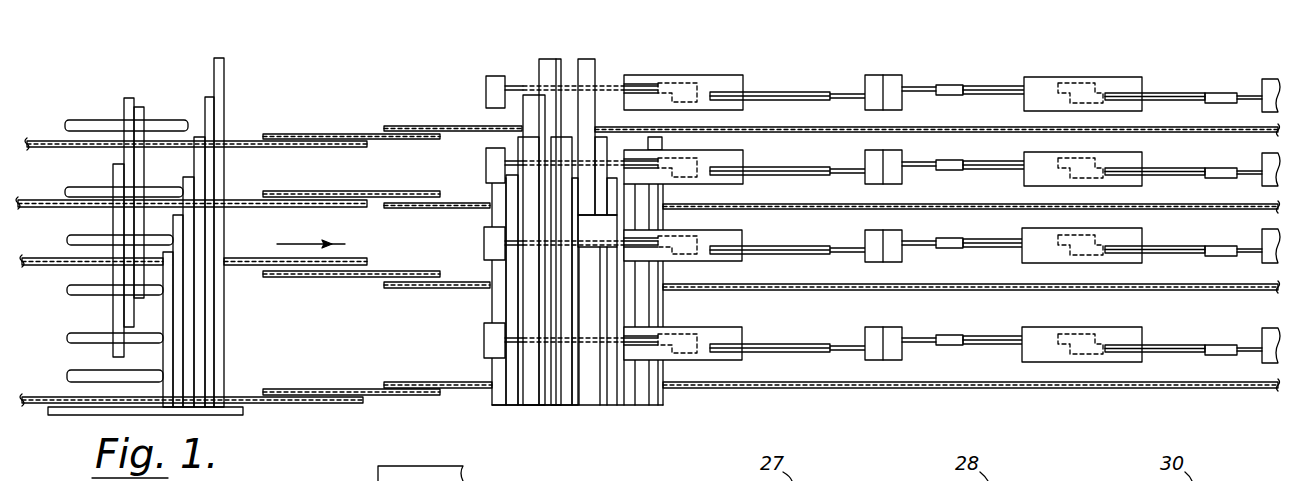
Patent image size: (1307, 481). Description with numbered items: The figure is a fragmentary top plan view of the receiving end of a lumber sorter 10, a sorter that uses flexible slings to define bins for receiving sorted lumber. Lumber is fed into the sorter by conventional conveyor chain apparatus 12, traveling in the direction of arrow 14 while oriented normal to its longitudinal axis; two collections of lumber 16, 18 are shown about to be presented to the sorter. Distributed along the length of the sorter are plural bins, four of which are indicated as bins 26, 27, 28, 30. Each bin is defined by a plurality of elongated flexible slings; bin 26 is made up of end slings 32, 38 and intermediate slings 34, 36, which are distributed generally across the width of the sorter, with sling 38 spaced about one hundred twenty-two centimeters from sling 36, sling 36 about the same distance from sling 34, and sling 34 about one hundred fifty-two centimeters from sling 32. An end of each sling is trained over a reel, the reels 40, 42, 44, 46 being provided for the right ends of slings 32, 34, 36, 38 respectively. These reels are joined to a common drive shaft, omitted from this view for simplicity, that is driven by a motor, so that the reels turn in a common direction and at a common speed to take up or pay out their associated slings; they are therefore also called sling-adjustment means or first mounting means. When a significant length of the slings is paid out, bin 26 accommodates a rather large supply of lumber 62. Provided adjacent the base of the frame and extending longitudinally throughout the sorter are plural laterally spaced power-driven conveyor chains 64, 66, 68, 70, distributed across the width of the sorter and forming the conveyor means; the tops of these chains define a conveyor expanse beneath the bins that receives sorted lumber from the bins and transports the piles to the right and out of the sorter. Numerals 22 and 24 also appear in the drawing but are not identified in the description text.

The lumber sorter 10 is at (463, 398).
The conveyor chain apparatus 12 is at (251, 118).
The arrow 14 is at (301, 244).
The collection of lumber 16 is at (112, 108).
The collection of lumber 18 is at (192, 107).
The element 22 is at (490, 480).
The element 24 is at (670, 480).
The bin 26 is at (604, 105).
The bin 27 is at (808, 356).
The bin 28 is at (918, 79).
The bin 30 is at (1243, 118).
The end sling 32 is at (533, 338).
The intermediate sling 34 is at (533, 243).
The intermediate sling 36 is at (512, 152).
The end sling 38 is at (522, 82).
The reel 40 is at (657, 330).
The reel 42 is at (657, 237).
The reel 44 is at (657, 158).
The reel 46 is at (657, 83).
The supply of lumber 62 is at (590, 406).
The conveyor chain 64 is at (956, 390).
The conveyor chain 66 is at (942, 290).
The conveyor chain 68 is at (950, 206).
The conveyor chain 70 is at (956, 128).